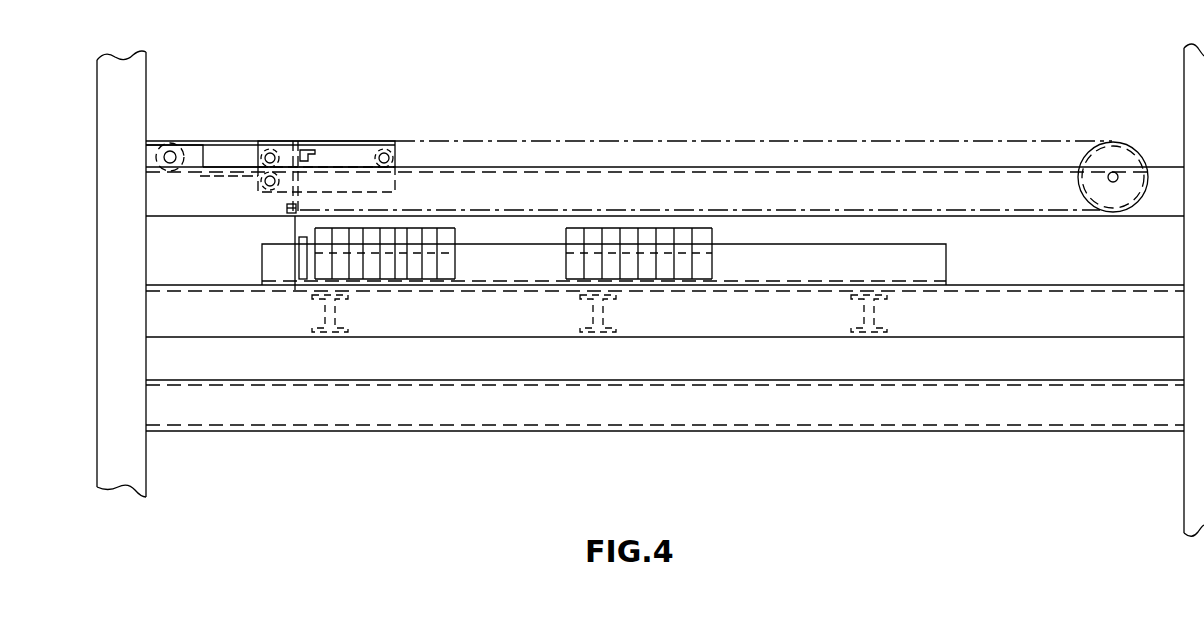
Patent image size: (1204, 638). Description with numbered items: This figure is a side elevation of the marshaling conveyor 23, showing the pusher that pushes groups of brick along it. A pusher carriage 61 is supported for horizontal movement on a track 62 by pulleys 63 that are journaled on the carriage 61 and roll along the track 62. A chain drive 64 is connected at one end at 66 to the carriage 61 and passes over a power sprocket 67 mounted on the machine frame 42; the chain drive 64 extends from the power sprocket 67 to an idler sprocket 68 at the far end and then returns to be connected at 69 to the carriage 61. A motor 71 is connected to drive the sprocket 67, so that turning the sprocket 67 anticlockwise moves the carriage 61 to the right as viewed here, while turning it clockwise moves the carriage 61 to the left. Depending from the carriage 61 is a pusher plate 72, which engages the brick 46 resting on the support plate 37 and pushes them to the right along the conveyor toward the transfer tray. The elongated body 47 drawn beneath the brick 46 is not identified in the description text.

The marshaling conveyor 23 is at (714, 136).
The support plate 37 is at (960, 287).
The machine frame 42 is at (132, 95).
The brick 46 is at (458, 236).
The carriage body 47 is at (930, 255).
The pusher carriage 61 is at (316, 146).
The track 62 is at (232, 168).
The pulleys 63 is at (277, 176).
The chain drive 64 is at (230, 170).
The chain connection 66 is at (262, 172).
The power sprocket 67 is at (171, 148).
The idler sprocket 68 is at (1110, 150).
The chain connection 69 is at (298, 209).
The motor 71 is at (205, 150).
The pusher plate 72 is at (298, 290).